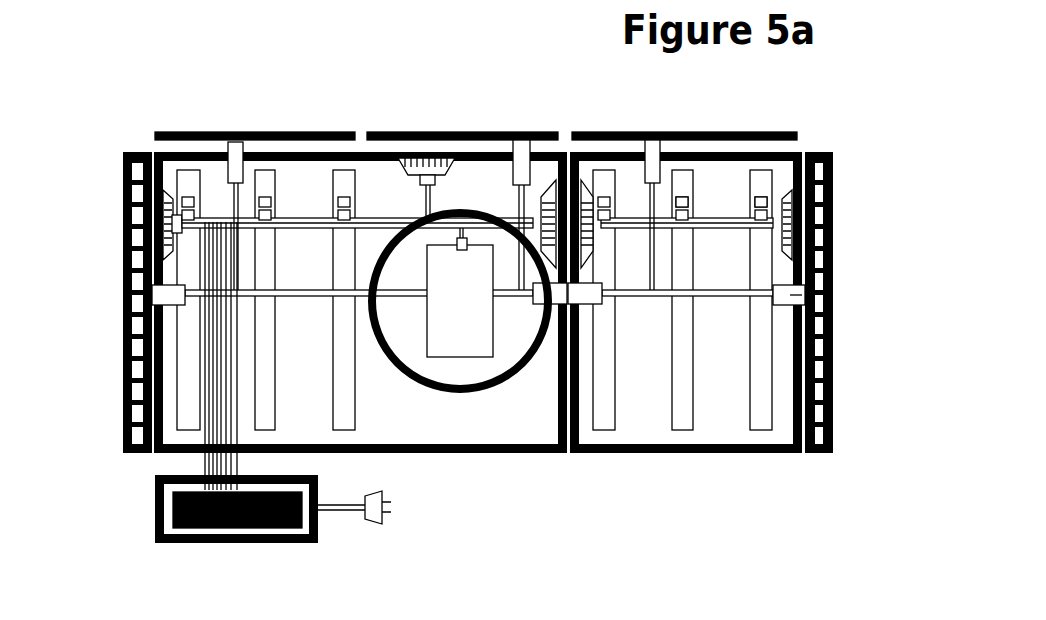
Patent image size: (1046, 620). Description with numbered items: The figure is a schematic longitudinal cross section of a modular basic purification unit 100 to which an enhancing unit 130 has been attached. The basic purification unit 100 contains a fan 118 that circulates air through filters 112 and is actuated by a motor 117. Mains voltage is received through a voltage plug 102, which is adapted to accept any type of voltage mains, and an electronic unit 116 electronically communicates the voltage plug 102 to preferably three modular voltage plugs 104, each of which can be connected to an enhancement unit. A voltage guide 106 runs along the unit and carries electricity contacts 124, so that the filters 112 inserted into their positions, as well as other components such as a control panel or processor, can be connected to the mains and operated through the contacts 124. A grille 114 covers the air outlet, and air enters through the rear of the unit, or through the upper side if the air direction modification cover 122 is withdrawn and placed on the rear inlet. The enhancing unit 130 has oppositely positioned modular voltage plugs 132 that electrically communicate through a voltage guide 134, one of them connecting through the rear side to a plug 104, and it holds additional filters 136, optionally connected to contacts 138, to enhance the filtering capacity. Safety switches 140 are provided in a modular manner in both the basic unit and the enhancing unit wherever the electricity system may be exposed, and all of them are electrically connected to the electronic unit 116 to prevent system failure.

The basic purification unit 100 is at (289, 112).
The voltage plug 102 is at (380, 521).
The modular voltage plugs 104 is at (163, 203).
The voltage guide 106 is at (300, 215).
The filters 112 is at (187, 393).
The grille 114 is at (123, 152).
The electronic unit 116 is at (107, 420).
The motor 117 is at (478, 337).
The fan 118 is at (410, 377).
The air direction modification cover 122 is at (483, 132).
The electricity contacts 124 is at (190, 197).
The enhancing unit 130 is at (850, 177).
The modular voltage plugs 132 is at (592, 160).
The voltage guide 134 is at (740, 195).
The filters 136 is at (602, 402).
The contacts 138 is at (677, 198).
The safety switches 140 is at (236, 142).